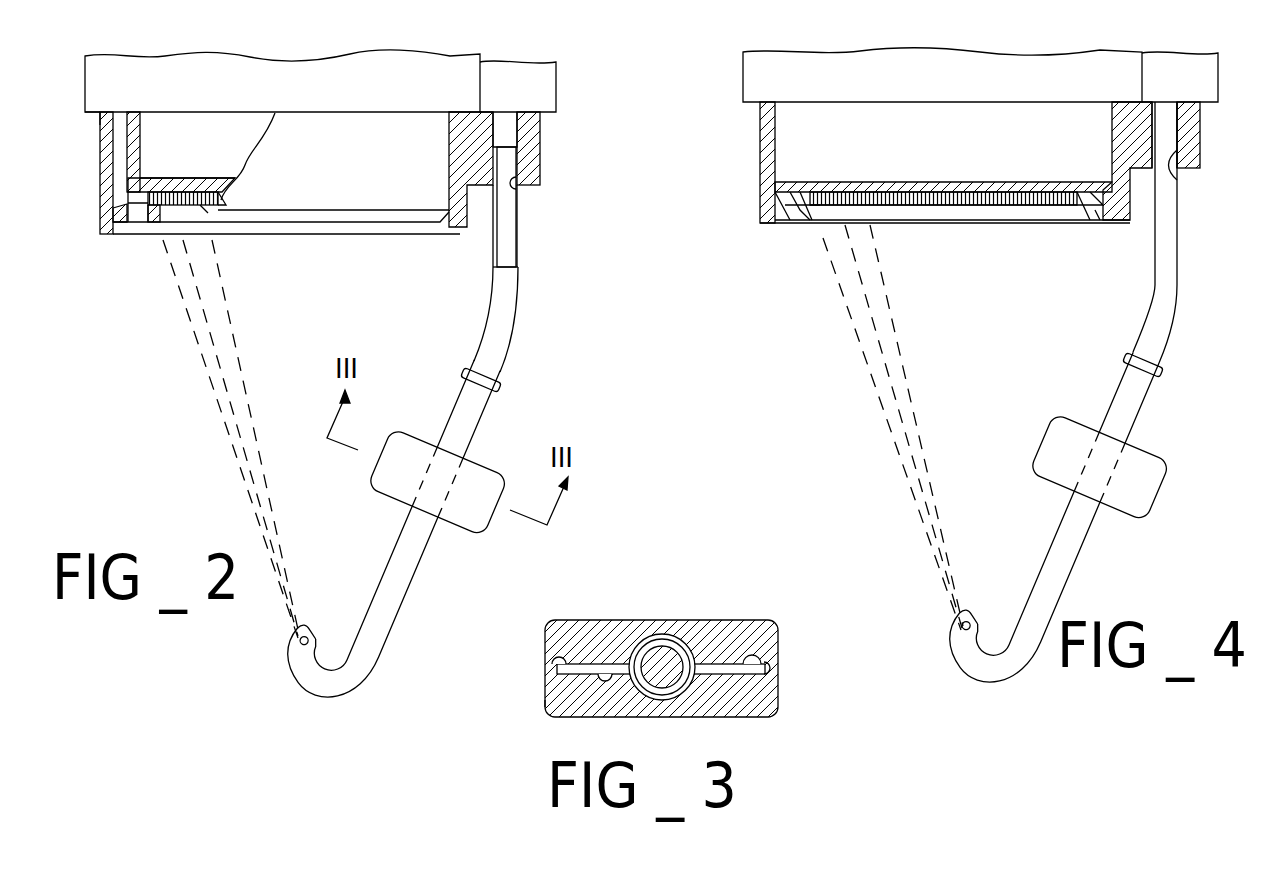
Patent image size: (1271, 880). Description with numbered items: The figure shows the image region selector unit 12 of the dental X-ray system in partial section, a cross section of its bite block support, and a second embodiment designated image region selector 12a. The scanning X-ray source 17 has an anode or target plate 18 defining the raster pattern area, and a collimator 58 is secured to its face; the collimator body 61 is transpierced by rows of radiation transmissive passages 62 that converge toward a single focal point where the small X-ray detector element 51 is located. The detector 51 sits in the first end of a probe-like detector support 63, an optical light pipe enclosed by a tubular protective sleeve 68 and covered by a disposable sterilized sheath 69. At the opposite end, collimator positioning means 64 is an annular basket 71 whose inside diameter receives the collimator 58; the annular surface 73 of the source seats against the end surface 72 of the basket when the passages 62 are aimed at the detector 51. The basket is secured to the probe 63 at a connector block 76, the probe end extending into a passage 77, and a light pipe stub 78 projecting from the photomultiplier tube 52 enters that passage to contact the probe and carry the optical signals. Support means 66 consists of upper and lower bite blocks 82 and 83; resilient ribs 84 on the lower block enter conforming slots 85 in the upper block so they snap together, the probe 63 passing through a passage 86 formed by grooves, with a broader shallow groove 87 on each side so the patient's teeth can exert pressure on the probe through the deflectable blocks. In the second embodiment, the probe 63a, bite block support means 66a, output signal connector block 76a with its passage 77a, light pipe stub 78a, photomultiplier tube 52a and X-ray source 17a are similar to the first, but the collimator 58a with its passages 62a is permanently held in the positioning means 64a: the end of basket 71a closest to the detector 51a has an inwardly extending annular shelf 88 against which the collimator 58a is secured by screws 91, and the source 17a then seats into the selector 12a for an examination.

In FIG. 2, the image region selector unit 12 is at (186, 380).
In FIG. 4, the image region selector 12a is at (1067, 293).
In FIG. 2, the scanning X-ray source 17 is at (150, 90).
In FIG. 4, the X-ray source 17a is at (818, 90).
In FIG. 2, the anode or target plate 18 is at (205, 177).
In FIG. 2, the X-ray detector element 51 is at (309, 647).
In FIG. 4, the detector 51a is at (969, 638).
In FIG. 2, the photomultiplier tube 52 is at (532, 90).
In FIG. 4, the photomultiplier tube 52a is at (1197, 90).
In FIG. 2, the collimator 58 is at (113, 211).
In FIG. 4, the collimator 58a is at (1014, 214).
In FIG. 2, the collimator body 61 is at (209, 215).
In FIG. 2, the radiation transmissive passages 62 is at (163, 207).
In FIG. 4, the radiation transmissive passages 62a is at (957, 206).
In FIG. 2, the detector support probe 63 is at (510, 240).
In FIG. 3, the detector support probe 63 is at (672, 650).
In FIG. 4, the probe 63a is at (1172, 252).
In FIG. 2, the collimator positioning means 64 is at (103, 246).
In FIG. 4, the positioning means 64a is at (760, 238).
In FIG. 2, the support means 66 is at (449, 549).
In FIG. 3, the support means 66 is at (651, 603).
In FIG. 4, the bite block support means 66a is at (1177, 453).
In FIG. 2, the tubular protective sleeve 68 is at (495, 266).
In FIG. 2, the disposable sterilized sheath 69 is at (382, 572).
In FIG. 2, the annular basket 71 is at (462, 232).
In FIG. 4, the basket 71a is at (760, 166).
In FIG. 2, the end surface 72 is at (103, 110).
In FIG. 2, the annular surface 73 is at (94, 116).
In FIG. 2, the connector block 76 is at (540, 170).
In FIG. 4, the output signal connector block 76a is at (1200, 152).
In FIG. 2, the passage 77 is at (520, 193).
In FIG. 4, the passage 77a is at (1178, 185).
In FIG. 2, the light pipe stub 78 is at (507, 127).
In FIG. 4, the light pipe stub 78a is at (1170, 120).
In FIG. 3, the upper bite block 82 is at (568, 620).
In FIG. 3, the lower bite block 83 is at (548, 705).
In FIG. 3, the resilient ribs 84 is at (768, 662).
In FIG. 3, the slots 85 is at (749, 640).
In FIG. 3, the passage 86 is at (676, 692).
In FIG. 3, the shallow groove 87 is at (607, 682).
In FIG. 4, the annular shelf 88 is at (822, 226).
In FIG. 4, the screws 91 is at (1097, 222).